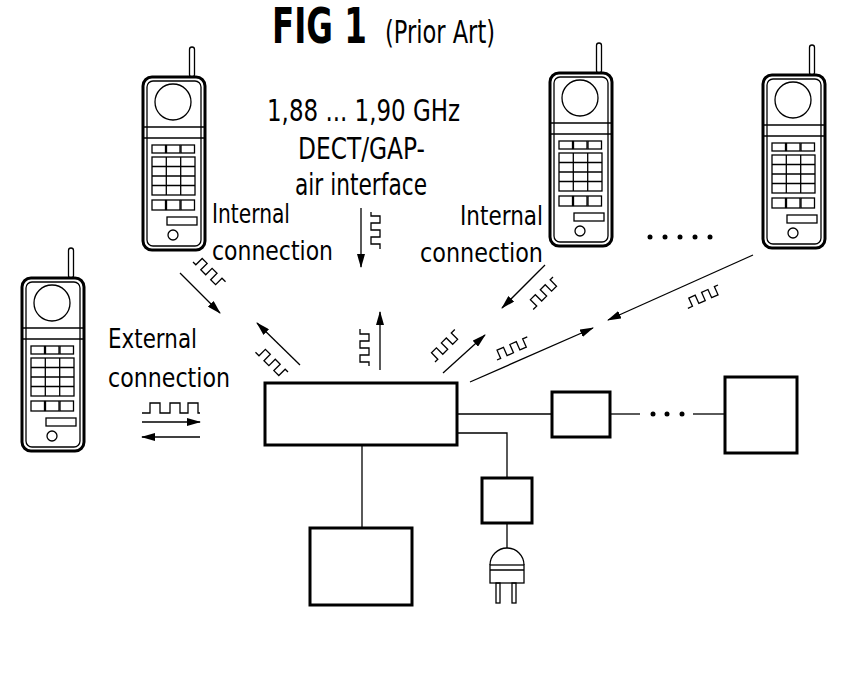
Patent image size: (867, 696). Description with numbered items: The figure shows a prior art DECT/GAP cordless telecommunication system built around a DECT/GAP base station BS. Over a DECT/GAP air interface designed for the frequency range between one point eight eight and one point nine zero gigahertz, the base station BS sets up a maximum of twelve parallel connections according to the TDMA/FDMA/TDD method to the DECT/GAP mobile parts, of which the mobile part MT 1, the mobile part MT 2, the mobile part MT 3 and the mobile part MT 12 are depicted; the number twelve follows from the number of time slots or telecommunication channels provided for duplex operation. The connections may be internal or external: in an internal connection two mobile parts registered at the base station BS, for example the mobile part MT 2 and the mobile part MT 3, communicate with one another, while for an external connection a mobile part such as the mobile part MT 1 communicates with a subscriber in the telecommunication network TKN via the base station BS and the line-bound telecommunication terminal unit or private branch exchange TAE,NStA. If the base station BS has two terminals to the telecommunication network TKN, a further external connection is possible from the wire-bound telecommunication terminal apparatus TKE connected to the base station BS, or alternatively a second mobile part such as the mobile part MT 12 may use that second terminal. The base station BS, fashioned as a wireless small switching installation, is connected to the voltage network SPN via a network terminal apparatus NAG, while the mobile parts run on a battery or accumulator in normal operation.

The mobile part MT 1 is at (53, 368).
The mobile part MT 2 is at (142, 148).
The mobile part MT 3 is at (549, 144).
The mobile part MT 12 is at (756, 146).
The DECT/GAP base station BS is at (280, 447).
The telecommunication terminal apparatus TKE is at (310, 582).
The network terminal apparatus NAG is at (533, 502).
The voltage network SPN is at (505, 608).
The telecommunication terminal unit / private branch exchange TAE,NStA is at (627, 373).
The telecommunication network TKN is at (760, 453).